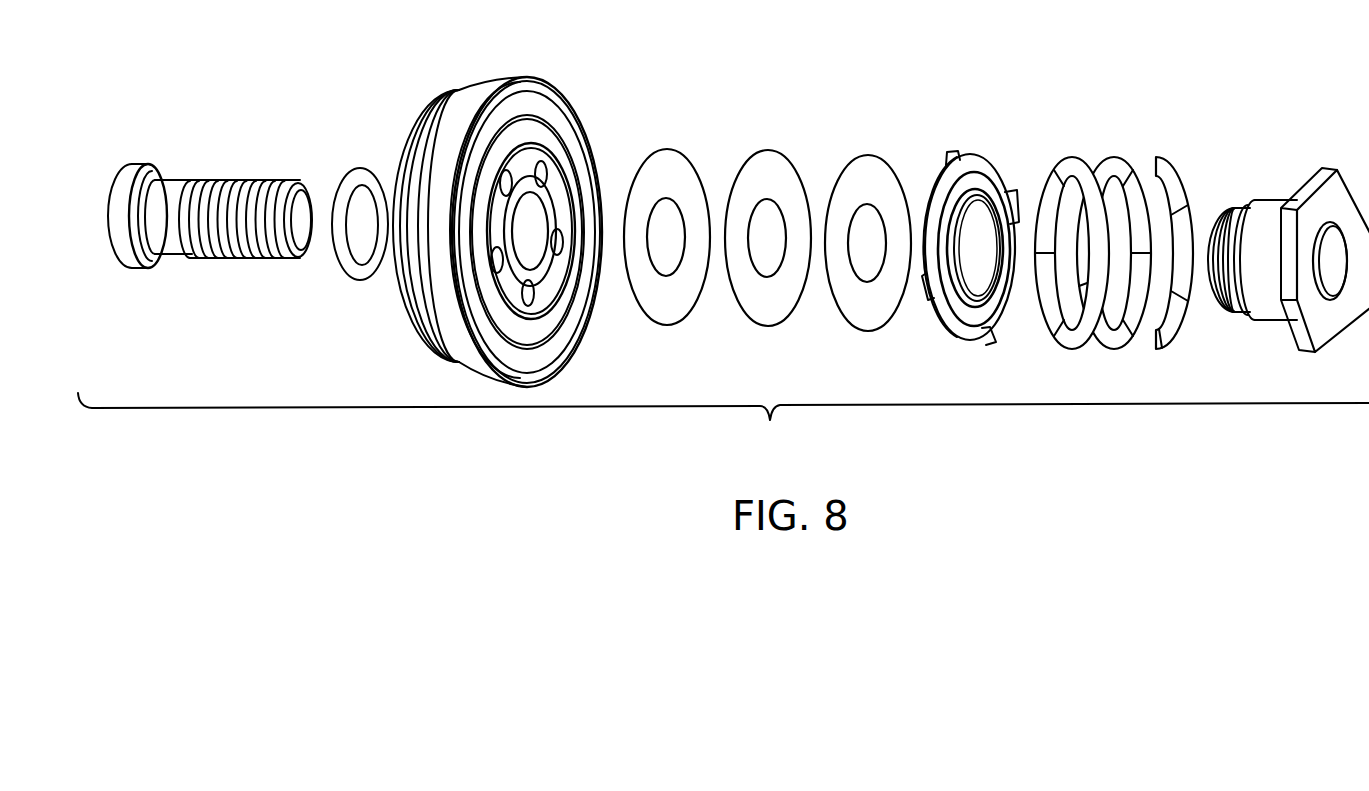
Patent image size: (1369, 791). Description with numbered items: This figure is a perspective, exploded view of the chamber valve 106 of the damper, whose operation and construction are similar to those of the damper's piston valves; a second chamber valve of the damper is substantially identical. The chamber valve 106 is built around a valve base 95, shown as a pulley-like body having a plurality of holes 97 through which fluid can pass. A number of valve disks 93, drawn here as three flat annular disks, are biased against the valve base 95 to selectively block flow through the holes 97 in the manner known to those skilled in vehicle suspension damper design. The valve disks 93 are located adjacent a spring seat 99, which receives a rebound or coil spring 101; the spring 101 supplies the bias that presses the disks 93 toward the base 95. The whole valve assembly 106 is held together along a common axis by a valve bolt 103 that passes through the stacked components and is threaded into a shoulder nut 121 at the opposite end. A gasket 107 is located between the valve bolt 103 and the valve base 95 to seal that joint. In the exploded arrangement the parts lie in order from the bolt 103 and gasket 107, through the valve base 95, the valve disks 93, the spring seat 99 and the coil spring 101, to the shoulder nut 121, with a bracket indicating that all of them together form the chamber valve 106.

The valve bolt 103 is at (176, 188).
The gasket 107 is at (349, 170).
The valve base 95 is at (551, 359).
The holes 97 is at (522, 158).
The valve disks 93 is at (661, 150).
The spring seat 99 is at (956, 336).
The coil spring 101 is at (1105, 157).
The shoulder nut 121 is at (1275, 203).
The chamber valve 106 is at (723, 427).